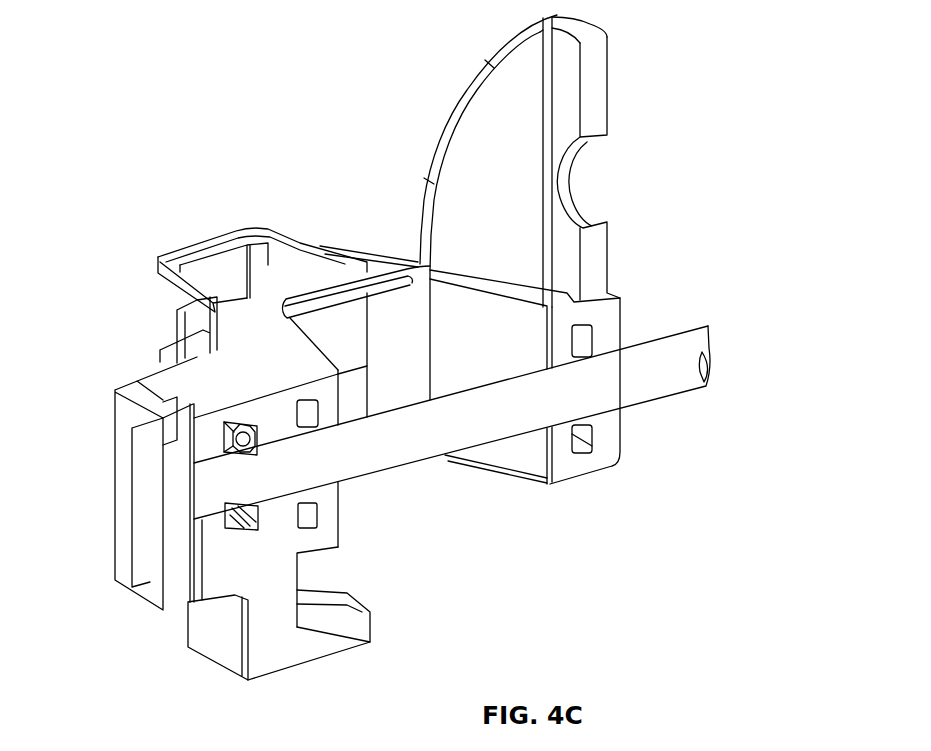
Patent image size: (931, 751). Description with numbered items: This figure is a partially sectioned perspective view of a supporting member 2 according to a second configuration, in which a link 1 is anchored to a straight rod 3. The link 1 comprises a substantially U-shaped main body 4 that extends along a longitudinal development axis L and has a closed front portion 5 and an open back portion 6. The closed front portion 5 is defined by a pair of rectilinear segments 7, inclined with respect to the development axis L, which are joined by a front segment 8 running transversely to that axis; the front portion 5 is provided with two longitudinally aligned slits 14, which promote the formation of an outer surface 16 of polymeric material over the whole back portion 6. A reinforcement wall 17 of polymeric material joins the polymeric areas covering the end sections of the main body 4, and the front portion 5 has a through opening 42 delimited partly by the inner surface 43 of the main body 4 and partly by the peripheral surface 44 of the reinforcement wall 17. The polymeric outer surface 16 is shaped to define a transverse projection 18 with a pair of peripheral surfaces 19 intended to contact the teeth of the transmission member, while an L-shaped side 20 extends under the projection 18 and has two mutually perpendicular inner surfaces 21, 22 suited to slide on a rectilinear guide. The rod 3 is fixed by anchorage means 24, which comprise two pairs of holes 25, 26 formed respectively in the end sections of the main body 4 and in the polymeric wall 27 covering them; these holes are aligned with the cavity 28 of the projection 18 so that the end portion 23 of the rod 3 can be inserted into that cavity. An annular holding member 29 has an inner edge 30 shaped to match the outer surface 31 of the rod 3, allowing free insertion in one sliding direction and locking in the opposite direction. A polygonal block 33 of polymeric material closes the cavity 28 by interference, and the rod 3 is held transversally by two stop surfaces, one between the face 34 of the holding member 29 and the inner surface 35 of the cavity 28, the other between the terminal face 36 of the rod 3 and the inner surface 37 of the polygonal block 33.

The link 1 is at (706, 62).
The supporting member 2 is at (540, 538).
The rod 3 is at (692, 322).
The main body 4 is at (320, 196).
The closed front portion 5 is at (262, 226).
The open back portion 6 is at (606, 334).
The rectilinear segments 7 is at (155, 290).
The front segment 8 is at (238, 262).
The slits 14 is at (345, 268).
The outer surface 16 is at (282, 353).
The reinforcement wall 17 is at (355, 340).
The transverse projection 18 is at (80, 422).
The peripheral surfaces 19 is at (133, 386).
The side 20 is at (380, 626).
The inner surface 21 is at (298, 578).
The inner surface 22 is at (348, 602).
The end portion 23 is at (190, 553).
The anchorage means 24 is at (309, 657).
The holes 25 is at (346, 492).
The holes 26 is at (370, 406).
The wall 27 is at (507, 292).
The cavity 28 is at (212, 437).
The holding member 29 is at (297, 433).
The inner edge 30 is at (246, 456).
The outer surface 31 is at (424, 470).
The polygonal block 33 is at (118, 590).
The face 34 is at (246, 444).
The inner surface 35 is at (232, 540).
The terminal face 36 is at (128, 505).
The inner surface 37 is at (120, 462).
The opening 42 is at (182, 263).
The inner surface 43 is at (228, 280).
The peripheral surface 44 is at (370, 300).
The longitudinal development axis L is at (630, 460).